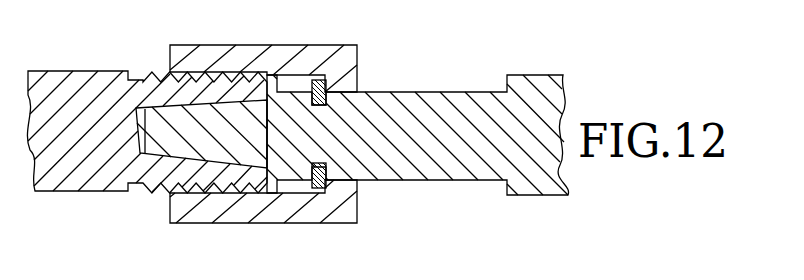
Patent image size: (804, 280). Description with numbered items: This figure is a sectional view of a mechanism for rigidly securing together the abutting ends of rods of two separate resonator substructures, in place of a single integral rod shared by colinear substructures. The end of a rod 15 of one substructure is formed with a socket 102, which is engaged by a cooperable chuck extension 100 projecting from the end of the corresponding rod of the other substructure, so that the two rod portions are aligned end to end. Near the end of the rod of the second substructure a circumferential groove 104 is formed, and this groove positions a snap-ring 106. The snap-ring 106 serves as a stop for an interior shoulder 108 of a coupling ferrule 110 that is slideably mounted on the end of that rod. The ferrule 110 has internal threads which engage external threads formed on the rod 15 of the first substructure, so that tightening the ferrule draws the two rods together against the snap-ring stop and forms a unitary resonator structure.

The rod 15 is at (100, 90).
The chuck extension 100 is at (215, 125).
The socket 102 is at (160, 157).
The circumferential groove 104 is at (333, 115).
The snap-ring 106 is at (355, 178).
The interior shoulder 108 is at (295, 75).
The coupling ferrule 110 is at (282, 207).